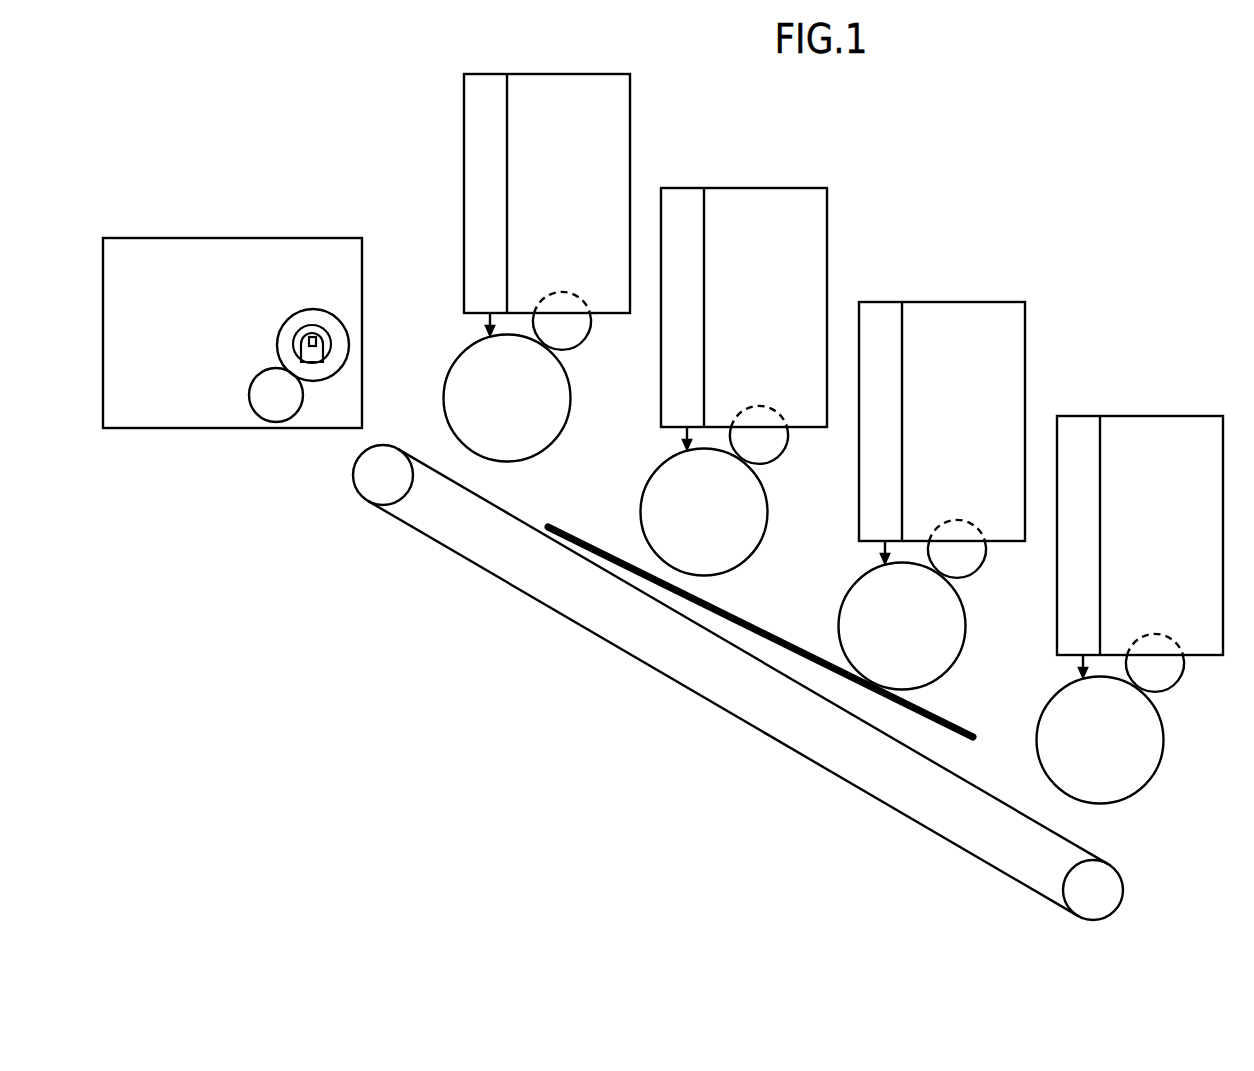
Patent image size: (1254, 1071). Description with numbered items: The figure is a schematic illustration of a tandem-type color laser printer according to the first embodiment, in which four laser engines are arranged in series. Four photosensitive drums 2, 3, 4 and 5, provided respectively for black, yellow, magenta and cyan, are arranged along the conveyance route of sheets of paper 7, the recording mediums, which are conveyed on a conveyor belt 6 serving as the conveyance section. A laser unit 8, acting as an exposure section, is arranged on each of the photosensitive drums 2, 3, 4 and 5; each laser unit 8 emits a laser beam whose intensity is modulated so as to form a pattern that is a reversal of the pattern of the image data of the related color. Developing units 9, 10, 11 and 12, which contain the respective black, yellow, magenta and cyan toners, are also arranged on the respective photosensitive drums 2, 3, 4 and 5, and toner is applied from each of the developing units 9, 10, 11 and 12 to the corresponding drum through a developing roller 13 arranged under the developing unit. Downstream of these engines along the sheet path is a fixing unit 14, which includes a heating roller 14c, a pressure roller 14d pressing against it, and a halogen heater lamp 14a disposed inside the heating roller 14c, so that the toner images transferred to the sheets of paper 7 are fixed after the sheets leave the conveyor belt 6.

The photosensitive drum 2 is at (455, 358).
The photosensitive drum 3 is at (640, 493).
The photosensitive drum 4 is at (836, 608).
The photosensitive drum 5 is at (1037, 723).
The conveyor belt 6 is at (668, 672).
The sheets of paper 7 is at (953, 737).
The laser unit 8 is at (463, 107).
The developing unit 9 is at (572, 74).
The developing unit 10 is at (768, 188).
The developing unit 11 is at (970, 302).
The developing unit 12 is at (1166, 416).
The developing roller 13 is at (580, 348).
The fixing unit 14 is at (140, 238).
The halogen heater lamp 14a is at (328, 327).
The heating roller 14c is at (306, 310).
The pressure roller 14d is at (250, 408).